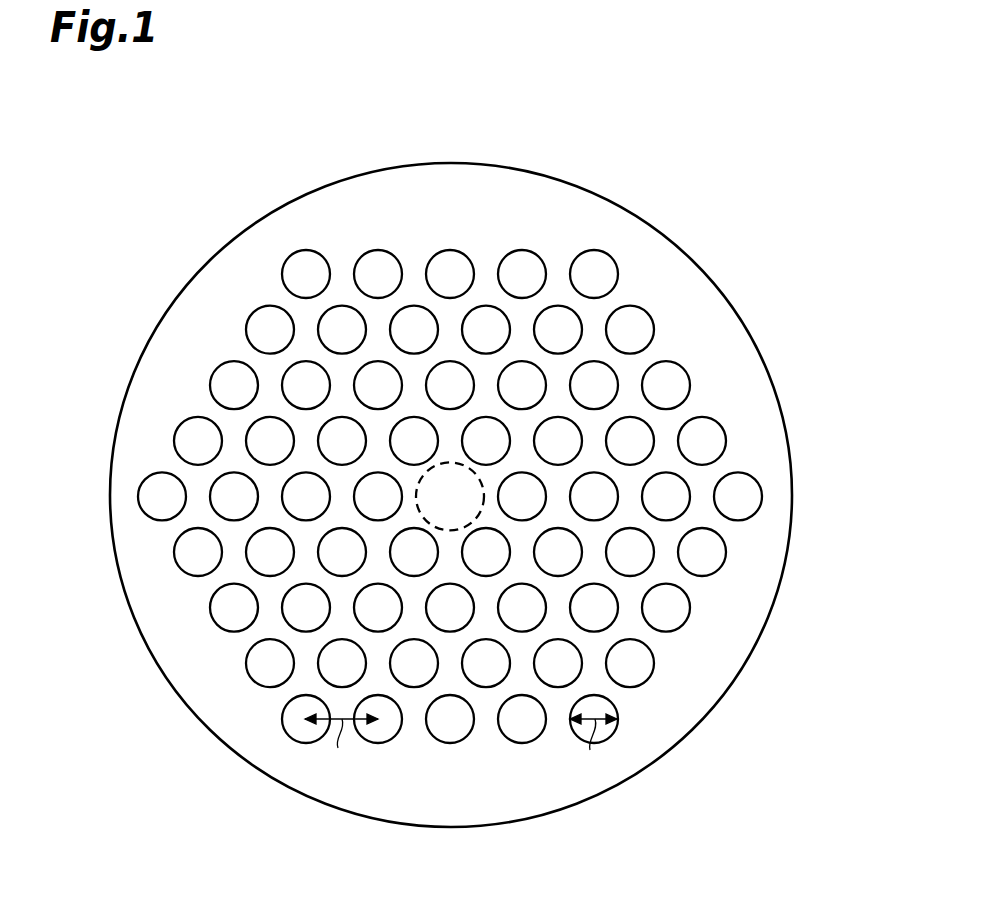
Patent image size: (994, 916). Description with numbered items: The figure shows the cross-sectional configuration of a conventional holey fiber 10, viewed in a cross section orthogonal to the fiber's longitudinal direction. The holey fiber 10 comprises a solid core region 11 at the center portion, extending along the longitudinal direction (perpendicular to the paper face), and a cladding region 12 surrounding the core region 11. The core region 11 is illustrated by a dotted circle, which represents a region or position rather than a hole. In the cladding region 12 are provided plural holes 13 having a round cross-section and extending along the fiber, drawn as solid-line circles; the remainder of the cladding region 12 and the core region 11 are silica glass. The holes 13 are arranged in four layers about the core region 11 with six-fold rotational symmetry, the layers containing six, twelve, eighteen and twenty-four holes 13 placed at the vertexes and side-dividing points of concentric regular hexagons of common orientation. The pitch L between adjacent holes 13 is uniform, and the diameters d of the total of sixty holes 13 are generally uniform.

The holey fiber 10 is at (487, 475).
The core region 11 is at (460, 485).
The cladding region 12 is at (777, 392).
The holes 13 is at (712, 562).